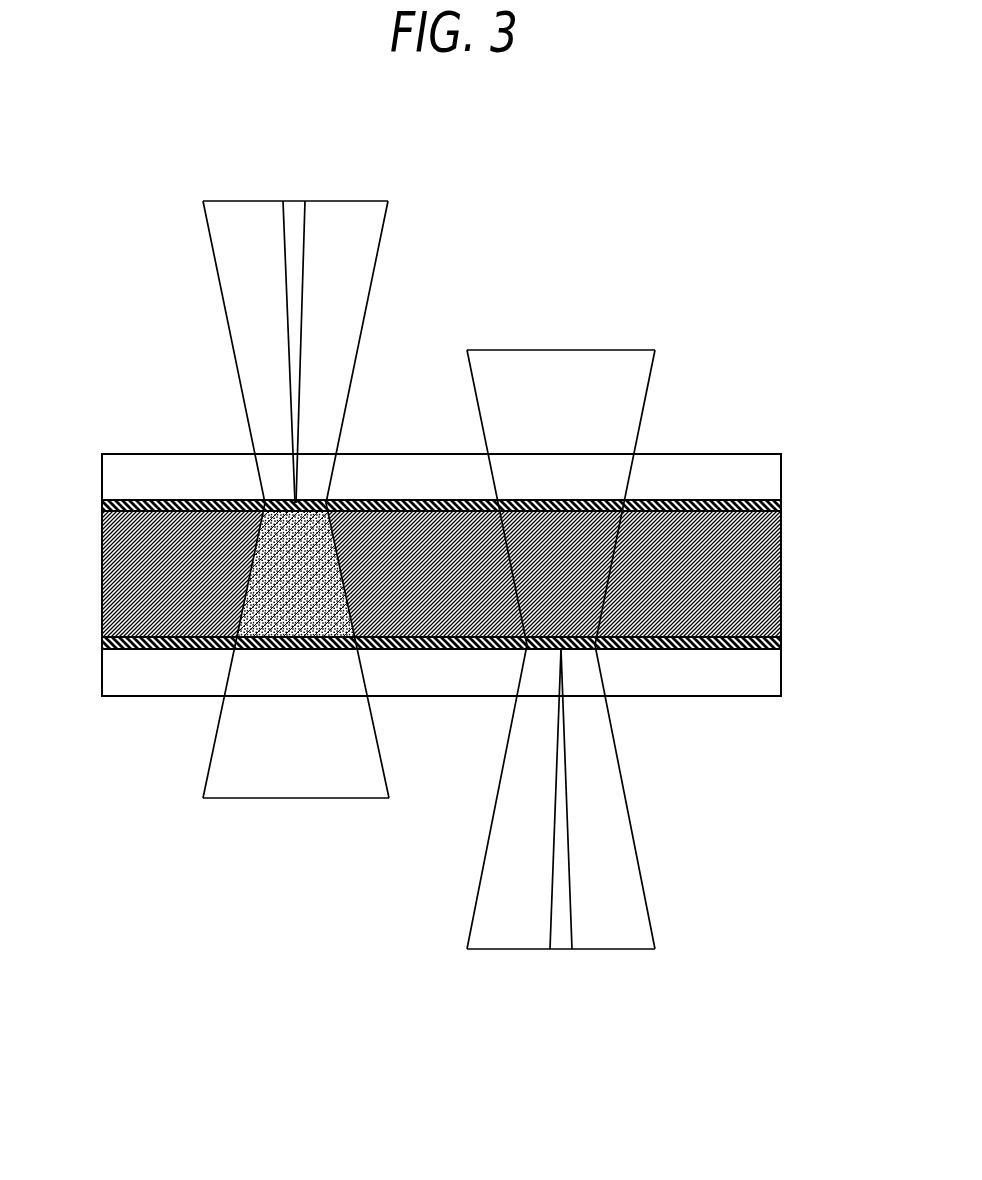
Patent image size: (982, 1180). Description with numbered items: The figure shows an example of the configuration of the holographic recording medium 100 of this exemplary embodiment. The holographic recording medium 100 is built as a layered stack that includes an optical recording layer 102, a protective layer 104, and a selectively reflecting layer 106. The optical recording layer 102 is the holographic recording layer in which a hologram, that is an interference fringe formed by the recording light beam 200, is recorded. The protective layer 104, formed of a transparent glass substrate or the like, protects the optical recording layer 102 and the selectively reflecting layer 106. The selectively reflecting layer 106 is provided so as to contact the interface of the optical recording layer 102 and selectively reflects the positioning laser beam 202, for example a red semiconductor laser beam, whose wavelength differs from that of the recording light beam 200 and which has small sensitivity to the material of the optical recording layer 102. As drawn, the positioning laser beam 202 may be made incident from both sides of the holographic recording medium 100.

The holographic recording medium 100 is at (439, 535).
The optical recording layer 102 is at (781, 588).
The protective layer 104 is at (732, 454).
The selectively reflecting layer 106 is at (781, 500).
The recording light beam 200 is at (367, 303).
The positioning laser beam 202 is at (293, 201).